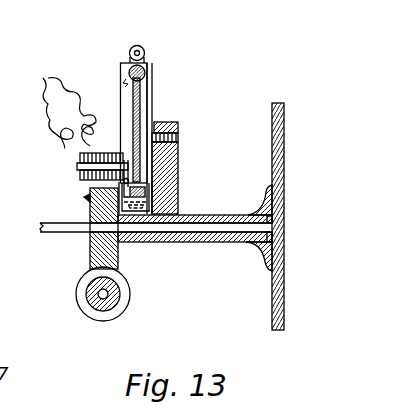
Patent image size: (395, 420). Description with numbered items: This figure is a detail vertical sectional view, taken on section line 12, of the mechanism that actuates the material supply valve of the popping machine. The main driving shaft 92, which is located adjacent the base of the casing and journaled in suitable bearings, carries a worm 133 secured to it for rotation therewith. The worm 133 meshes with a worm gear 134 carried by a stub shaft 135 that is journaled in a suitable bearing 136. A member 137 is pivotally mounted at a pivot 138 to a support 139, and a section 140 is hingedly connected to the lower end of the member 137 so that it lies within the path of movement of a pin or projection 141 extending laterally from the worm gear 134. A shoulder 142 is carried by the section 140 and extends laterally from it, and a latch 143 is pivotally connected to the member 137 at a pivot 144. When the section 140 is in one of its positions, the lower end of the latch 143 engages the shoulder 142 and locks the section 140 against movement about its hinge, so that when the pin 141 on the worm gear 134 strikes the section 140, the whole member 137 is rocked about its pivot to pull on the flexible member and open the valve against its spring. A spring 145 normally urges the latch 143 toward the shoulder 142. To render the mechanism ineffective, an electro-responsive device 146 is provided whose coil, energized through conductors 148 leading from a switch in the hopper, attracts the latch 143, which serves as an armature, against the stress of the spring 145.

The section line / shaft 12 is at (121, 25).
The shaft 92 is at (128, 280).
The worm 133 is at (122, 298).
The worm gear 134 is at (88, 250).
The stub shaft 135 is at (232, 215).
The bearing 136 is at (201, 242).
The member 137 is at (148, 104).
The pivot 138 is at (179, 132).
The support 139 is at (179, 151).
The section 140 is at (119, 183).
The pin or projection 141 is at (160, 197).
The shoulder 142 is at (178, 170).
The latch 143 is at (149, 88).
The pivot 144 is at (149, 70).
The spring 145 is at (116, 83).
The electro-responsive device 146 is at (78, 165).
The conductors 148 is at (54, 110).